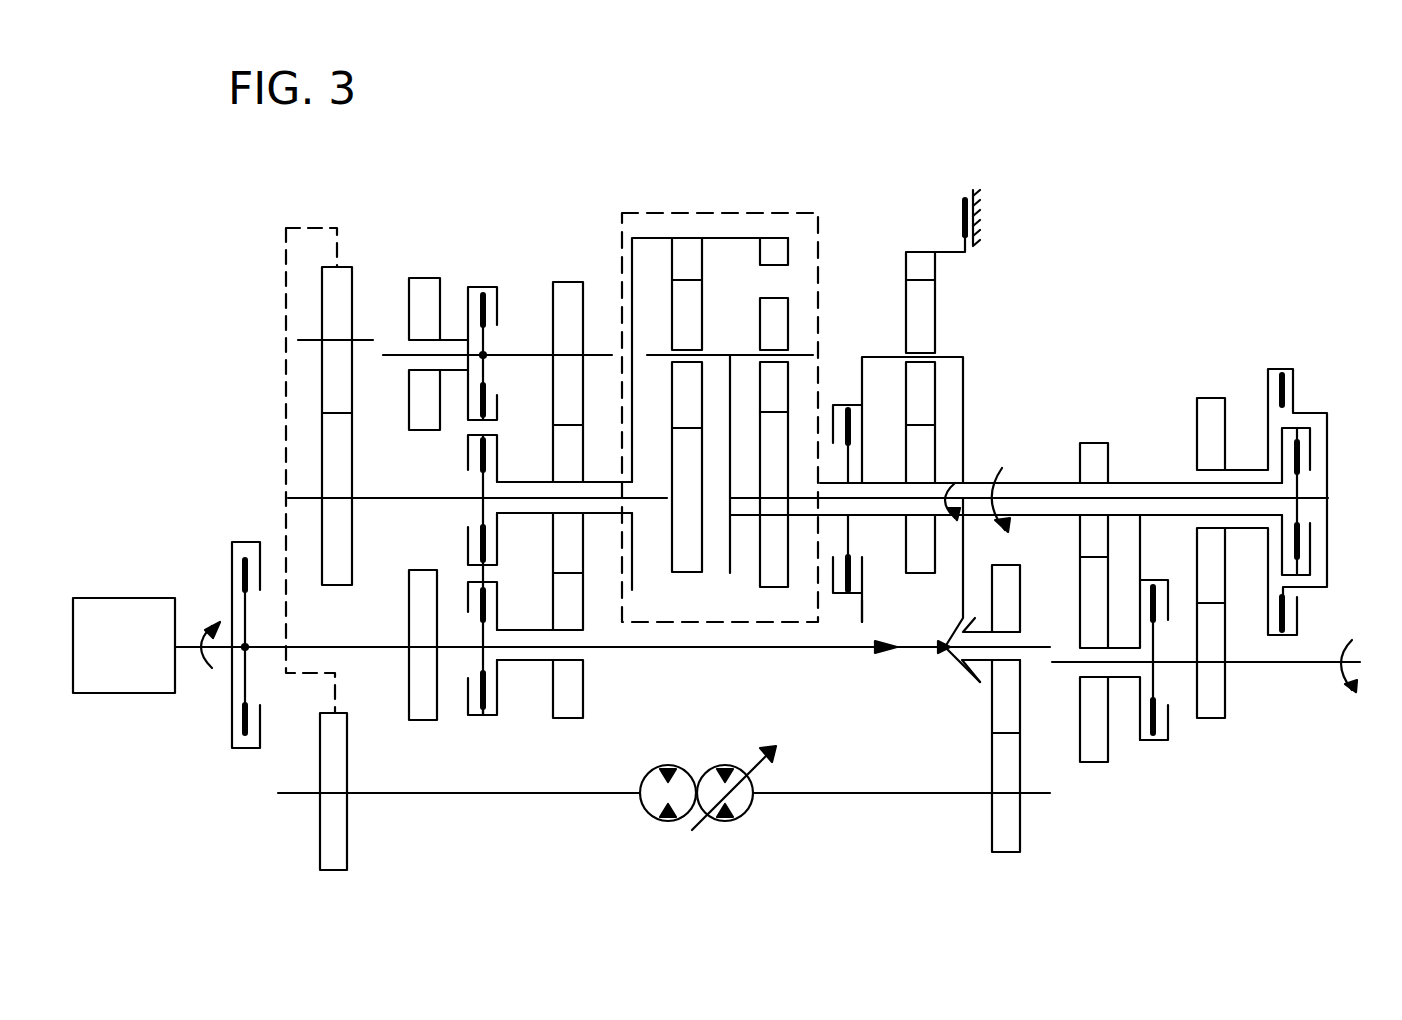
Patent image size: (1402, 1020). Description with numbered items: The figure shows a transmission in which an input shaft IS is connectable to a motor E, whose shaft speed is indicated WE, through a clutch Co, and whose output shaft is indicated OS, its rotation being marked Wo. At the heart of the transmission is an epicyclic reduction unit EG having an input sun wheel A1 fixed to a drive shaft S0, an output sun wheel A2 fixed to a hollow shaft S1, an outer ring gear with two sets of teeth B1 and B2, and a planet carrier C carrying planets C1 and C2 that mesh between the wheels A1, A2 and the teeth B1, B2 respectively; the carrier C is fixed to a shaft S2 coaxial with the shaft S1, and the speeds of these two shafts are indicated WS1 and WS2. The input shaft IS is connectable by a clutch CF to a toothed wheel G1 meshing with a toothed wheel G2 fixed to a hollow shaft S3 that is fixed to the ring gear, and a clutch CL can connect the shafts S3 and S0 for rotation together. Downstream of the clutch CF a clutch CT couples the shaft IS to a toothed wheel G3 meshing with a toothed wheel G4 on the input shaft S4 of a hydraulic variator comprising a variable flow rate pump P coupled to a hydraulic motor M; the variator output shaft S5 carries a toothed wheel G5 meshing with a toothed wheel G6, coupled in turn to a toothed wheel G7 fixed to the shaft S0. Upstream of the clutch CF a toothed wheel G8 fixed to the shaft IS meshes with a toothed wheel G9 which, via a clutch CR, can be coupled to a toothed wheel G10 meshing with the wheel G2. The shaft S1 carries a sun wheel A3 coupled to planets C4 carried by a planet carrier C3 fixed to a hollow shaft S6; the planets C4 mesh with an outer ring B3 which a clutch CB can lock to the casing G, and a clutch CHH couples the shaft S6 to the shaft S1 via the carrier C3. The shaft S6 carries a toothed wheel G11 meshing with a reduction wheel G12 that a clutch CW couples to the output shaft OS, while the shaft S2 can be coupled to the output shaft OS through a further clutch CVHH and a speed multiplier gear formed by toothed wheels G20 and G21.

The motor E is at (106, 608).
The motor shaft speed WE is at (205, 628).
The clutch Co is at (245, 538).
The input shaft IS is at (340, 647).
The output shaft OS is at (1280, 662).
The toothed wheel G6 is at (345, 292).
The toothed wheel G7 is at (345, 455).
The toothed wheel G5 is at (322, 830).
The output shaft of the variator S5 is at (468, 795).
The input shaft of the variator S4 is at (865, 795).
The drive shaft S0 is at (432, 498).
The toothed wheel G9 is at (420, 400).
The clutch CR is at (483, 280).
The clutch CL is at (495, 440).
The clutch CF is at (483, 724).
The hollow shaft S3 is at (526, 482).
The toothed wheel G10 is at (568, 296).
The toothed wheel G8 is at (418, 572).
The toothed wheel G2 is at (560, 542).
The toothed wheel G1 is at (560, 602).
The epicyclic reduction unit EG is at (712, 210).
The set of teeth B1 is at (682, 262).
The planets C1 is at (682, 318).
The input sun wheel A1 is at (670, 478).
The planet carrier C is at (735, 440).
The set of teeth B2 is at (772, 252).
The planets C2 is at (772, 322).
The output sun wheel A2 is at (780, 432).
The shaft S2 is at (750, 498).
The hollow shaft S1 is at (840, 480).
The clutch CHH is at (870, 610).
The planet carrier C3 is at (882, 355).
The outer ring B3 is at (915, 266).
The planets C4 is at (925, 316).
The body or casing G is at (978, 215).
The clutch CB is at (968, 195).
The sun wheel A3 is at (918, 464).
The hollow shaft S6 is at (1012, 486).
The speed of shaft S2 WS2 is at (956, 482).
The speed of shaft S1 WS1 is at (1002, 466).
The clutch CT is at (940, 662).
The toothed wheel G3 is at (1000, 705).
The toothed wheel G4 is at (1005, 836).
The hydraulic motor M is at (650, 800).
The variable flow rate pump P is at (750, 806).
The toothed wheel G11 is at (1095, 450).
The toothed wheel G12 is at (1100, 592).
The clutch CW is at (1156, 748).
The toothed wheel G20 is at (1212, 405).
The toothed wheel G21 is at (1215, 720).
The clutch CVHH is at (1283, 372).
The output rotation direction Wo is at (1345, 688).